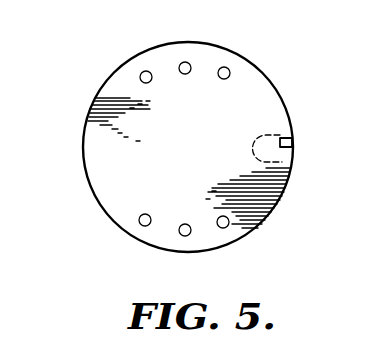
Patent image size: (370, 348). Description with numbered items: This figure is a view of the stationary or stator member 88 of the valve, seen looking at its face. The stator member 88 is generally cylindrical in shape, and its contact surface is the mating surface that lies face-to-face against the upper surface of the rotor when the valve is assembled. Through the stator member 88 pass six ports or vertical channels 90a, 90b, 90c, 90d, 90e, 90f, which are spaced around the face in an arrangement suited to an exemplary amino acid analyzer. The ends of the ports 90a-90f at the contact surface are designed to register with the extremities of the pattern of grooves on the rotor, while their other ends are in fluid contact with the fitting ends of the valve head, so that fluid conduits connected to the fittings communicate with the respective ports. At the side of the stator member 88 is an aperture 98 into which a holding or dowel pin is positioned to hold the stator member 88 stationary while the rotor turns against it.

The stator member 88 is at (92, 103).
The port 90a is at (146, 71).
The port 90b is at (207, 34).
The port 90c is at (229, 70).
The port 90d is at (147, 226).
The port 90e is at (191, 233).
The port 90f is at (229, 226).
The aperture 98 is at (292, 146).